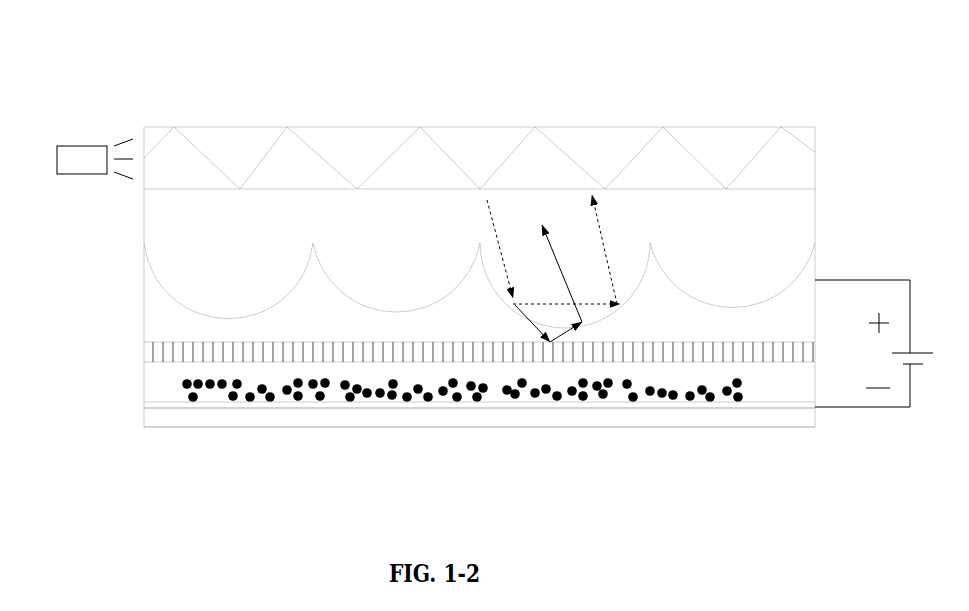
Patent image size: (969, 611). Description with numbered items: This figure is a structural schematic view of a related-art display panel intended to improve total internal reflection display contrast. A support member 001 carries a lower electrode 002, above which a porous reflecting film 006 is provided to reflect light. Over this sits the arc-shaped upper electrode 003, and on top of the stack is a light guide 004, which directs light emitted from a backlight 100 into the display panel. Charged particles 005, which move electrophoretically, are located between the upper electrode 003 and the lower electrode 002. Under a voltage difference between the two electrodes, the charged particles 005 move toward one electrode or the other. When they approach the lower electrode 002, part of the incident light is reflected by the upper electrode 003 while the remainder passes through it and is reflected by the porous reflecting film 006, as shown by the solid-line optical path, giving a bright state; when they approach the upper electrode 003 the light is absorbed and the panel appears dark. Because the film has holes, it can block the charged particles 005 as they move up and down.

The backlight 100 is at (77, 145).
The light guide 004 is at (593, 126).
The upper electrode 003 is at (678, 300).
The porous reflecting film 006 is at (278, 342).
The charged particles 005 is at (490, 389).
The lower electrode 002 is at (774, 400).
The support member 001 is at (709, 429).